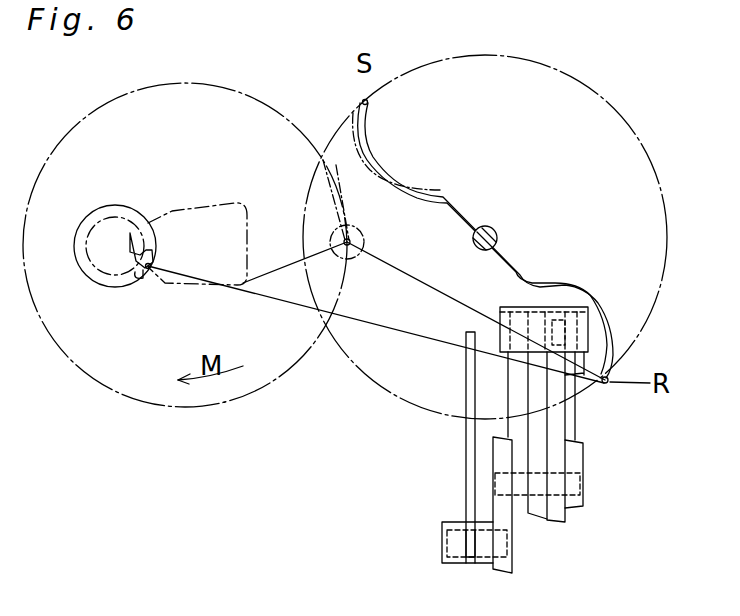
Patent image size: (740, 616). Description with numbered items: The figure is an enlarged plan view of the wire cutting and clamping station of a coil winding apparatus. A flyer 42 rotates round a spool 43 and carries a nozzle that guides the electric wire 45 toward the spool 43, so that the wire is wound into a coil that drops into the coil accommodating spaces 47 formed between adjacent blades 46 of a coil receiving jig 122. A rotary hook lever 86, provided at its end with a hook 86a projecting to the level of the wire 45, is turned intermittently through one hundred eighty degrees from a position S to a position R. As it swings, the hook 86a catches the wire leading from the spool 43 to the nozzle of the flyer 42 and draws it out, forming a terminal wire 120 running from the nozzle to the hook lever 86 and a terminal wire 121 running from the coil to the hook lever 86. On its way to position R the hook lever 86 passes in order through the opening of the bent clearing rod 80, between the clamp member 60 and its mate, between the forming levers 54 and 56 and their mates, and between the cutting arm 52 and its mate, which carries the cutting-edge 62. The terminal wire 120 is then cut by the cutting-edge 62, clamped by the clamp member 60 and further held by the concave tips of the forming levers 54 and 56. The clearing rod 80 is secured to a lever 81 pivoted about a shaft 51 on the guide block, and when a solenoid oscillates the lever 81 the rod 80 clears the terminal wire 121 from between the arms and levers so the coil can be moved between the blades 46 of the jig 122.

The flyer 42 is at (323, 160).
The spool 43 is at (205, 220).
The electric wire 45 is at (278, 265).
The blades 46 is at (142, 272).
The coil accommodating space 47 is at (150, 268).
The shaft 51 is at (442, 540).
The cutting arm 52 is at (565, 415).
The forming lever 54 is at (518, 453).
The forming lever 56 is at (540, 443).
The clamp member 60 is at (557, 312).
The cutting-edge 62 is at (585, 376).
The bent clearing rod 80 is at (467, 462).
The lever 81 is at (470, 528).
The rotary hook lever 86 is at (515, 268).
The hook 86a is at (612, 374).
The terminal wire 120 is at (437, 288).
The terminal wire 121 is at (296, 312).
The coil receiving jig 122 is at (110, 287).